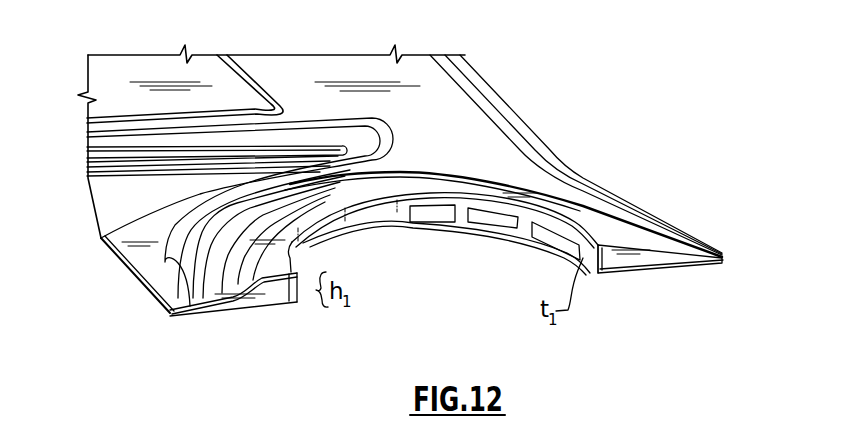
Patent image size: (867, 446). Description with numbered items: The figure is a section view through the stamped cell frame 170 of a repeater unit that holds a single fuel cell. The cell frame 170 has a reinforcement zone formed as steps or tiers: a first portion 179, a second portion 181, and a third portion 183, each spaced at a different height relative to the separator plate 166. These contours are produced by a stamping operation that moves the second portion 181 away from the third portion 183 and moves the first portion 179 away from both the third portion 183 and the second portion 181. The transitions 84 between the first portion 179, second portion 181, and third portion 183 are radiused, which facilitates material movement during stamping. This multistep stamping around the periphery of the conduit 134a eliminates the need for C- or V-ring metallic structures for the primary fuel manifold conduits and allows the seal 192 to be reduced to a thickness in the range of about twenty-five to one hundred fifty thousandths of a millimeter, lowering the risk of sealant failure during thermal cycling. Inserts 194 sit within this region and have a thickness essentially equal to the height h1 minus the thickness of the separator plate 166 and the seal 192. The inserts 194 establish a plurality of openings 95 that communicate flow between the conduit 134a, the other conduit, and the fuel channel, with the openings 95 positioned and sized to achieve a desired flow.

The second portion 181 is at (150, 294).
The third portion 183 is at (163, 302).
The transitions 84 is at (212, 305).
The first portion 179 is at (250, 282).
The conduit 134a is at (305, 229).
The inserts 194 is at (387, 218).
The openings 95 is at (562, 238).
The seal 192 is at (583, 222).
The cell frame 170 is at (670, 231).
The separator plate 166 is at (676, 265).